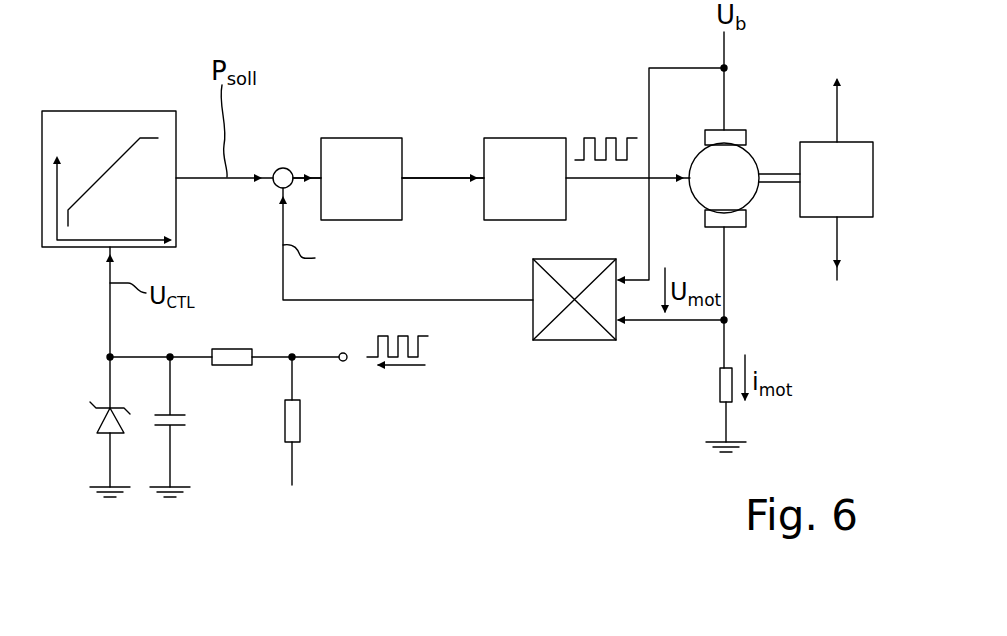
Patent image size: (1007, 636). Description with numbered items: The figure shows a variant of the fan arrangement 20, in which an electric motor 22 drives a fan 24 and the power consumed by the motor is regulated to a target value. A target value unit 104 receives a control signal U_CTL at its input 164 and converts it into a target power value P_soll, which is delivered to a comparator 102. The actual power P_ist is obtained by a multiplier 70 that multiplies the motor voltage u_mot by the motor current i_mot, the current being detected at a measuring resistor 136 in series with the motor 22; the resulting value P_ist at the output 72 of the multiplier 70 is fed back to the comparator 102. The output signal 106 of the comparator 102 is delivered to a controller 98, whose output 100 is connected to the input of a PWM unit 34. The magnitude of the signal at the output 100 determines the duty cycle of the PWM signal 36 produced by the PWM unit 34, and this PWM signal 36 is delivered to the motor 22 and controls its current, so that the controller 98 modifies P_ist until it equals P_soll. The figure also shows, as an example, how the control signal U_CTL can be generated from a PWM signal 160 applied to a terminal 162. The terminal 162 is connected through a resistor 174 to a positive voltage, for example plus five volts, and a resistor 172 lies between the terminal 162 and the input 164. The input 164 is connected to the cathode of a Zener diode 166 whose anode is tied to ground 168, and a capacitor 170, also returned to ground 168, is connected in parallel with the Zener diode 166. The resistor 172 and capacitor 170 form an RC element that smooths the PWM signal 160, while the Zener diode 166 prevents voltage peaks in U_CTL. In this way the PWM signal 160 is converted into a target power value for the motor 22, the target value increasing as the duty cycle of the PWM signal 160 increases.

The fan arrangement 20 is at (742, 177).
The electric motor 22 is at (748, 200).
The fan 24 is at (849, 140).
The PWM unit 34 is at (538, 137).
The PWM signal 36 is at (600, 137).
The multiplier 70 is at (589, 342).
The output of multiplier 72 is at (508, 300).
The controller 98 is at (368, 137).
The output of controller 100 is at (423, 177).
The comparator 102 is at (283, 167).
The target value unit 104 is at (133, 110).
The output signal of comparator 106 is at (300, 173).
The measuring resistor 136 is at (720, 385).
The PWM signal 160 is at (428, 342).
The terminal 162 is at (342, 351).
The input 164 is at (109, 313).
The Zener diode 166 is at (102, 408).
The ground 168 is at (724, 440).
The capacitor 170 is at (182, 422).
The resistor 172 is at (230, 348).
The resistor 174 is at (300, 420).